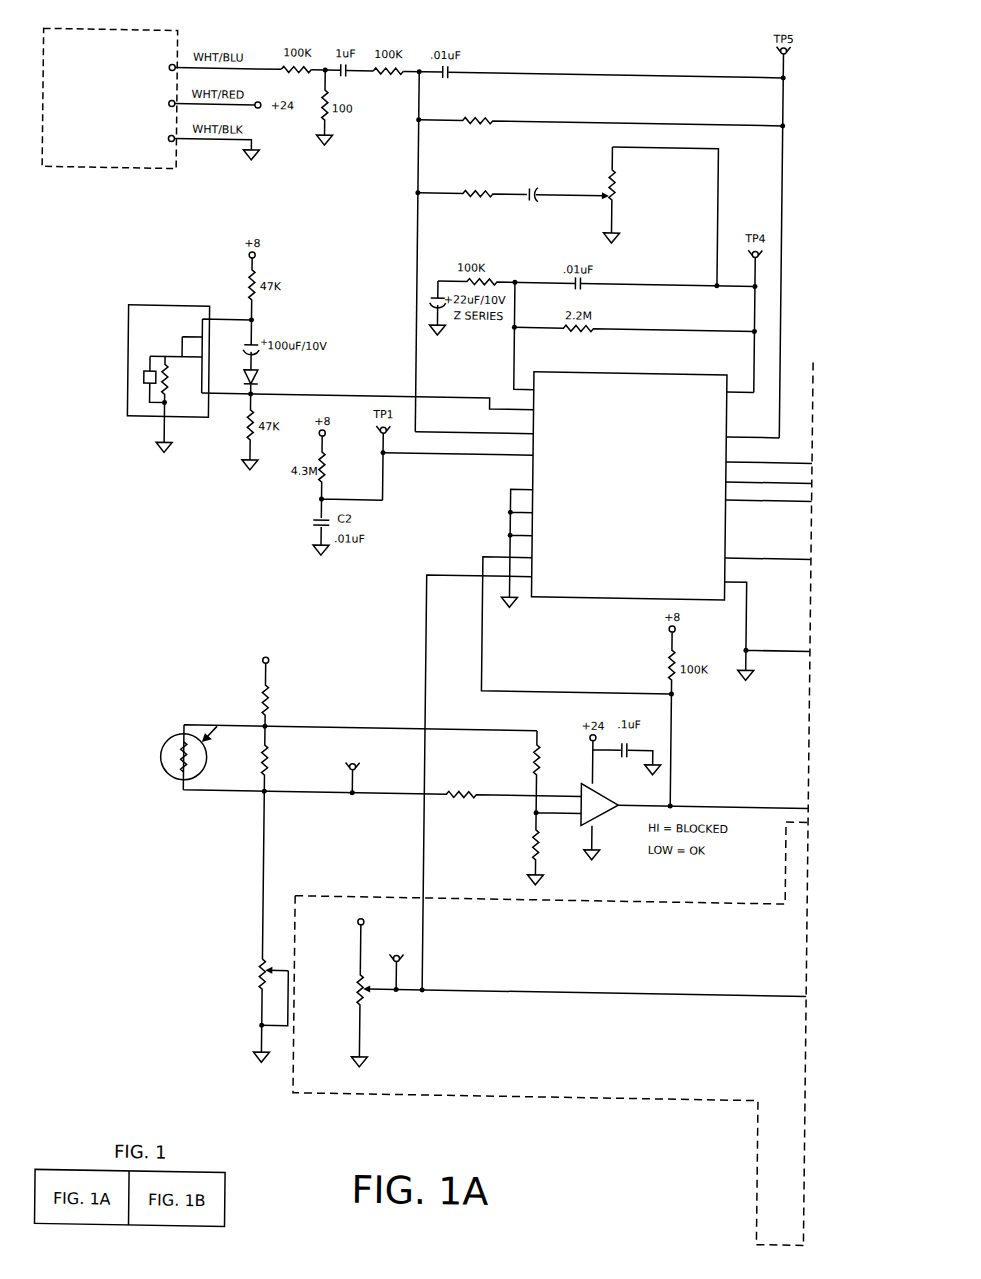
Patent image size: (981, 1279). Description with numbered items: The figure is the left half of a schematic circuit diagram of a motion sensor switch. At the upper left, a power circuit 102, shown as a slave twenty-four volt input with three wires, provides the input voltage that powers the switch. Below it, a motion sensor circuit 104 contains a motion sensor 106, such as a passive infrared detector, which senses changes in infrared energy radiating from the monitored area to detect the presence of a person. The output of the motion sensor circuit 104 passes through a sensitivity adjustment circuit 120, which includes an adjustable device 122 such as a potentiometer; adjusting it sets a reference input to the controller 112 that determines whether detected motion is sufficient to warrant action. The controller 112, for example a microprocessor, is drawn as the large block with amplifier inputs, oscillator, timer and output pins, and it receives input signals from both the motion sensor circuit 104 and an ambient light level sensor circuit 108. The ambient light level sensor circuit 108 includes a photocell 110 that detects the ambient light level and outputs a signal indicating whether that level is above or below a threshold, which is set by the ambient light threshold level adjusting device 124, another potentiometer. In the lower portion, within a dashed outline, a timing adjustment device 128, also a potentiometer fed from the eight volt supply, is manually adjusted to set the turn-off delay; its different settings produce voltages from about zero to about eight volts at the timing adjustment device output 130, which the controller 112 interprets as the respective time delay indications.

The power circuit 102 is at (119, 187).
The motion sensor circuit 104 is at (128, 446).
The motion sensor 106 is at (125, 354).
The ambient light level sensor circuit 108 is at (247, 817).
The photocell 110 is at (166, 748).
The controller 112 is at (617, 603).
The sensitivity adjustment circuit 120 is at (404, 235).
The adjustable device 122 is at (620, 209).
The ambient light threshold level adjusting device 124 is at (253, 1038).
The timing adjustment device 128 is at (380, 1063).
The timing adjustment device output 130 is at (428, 989).